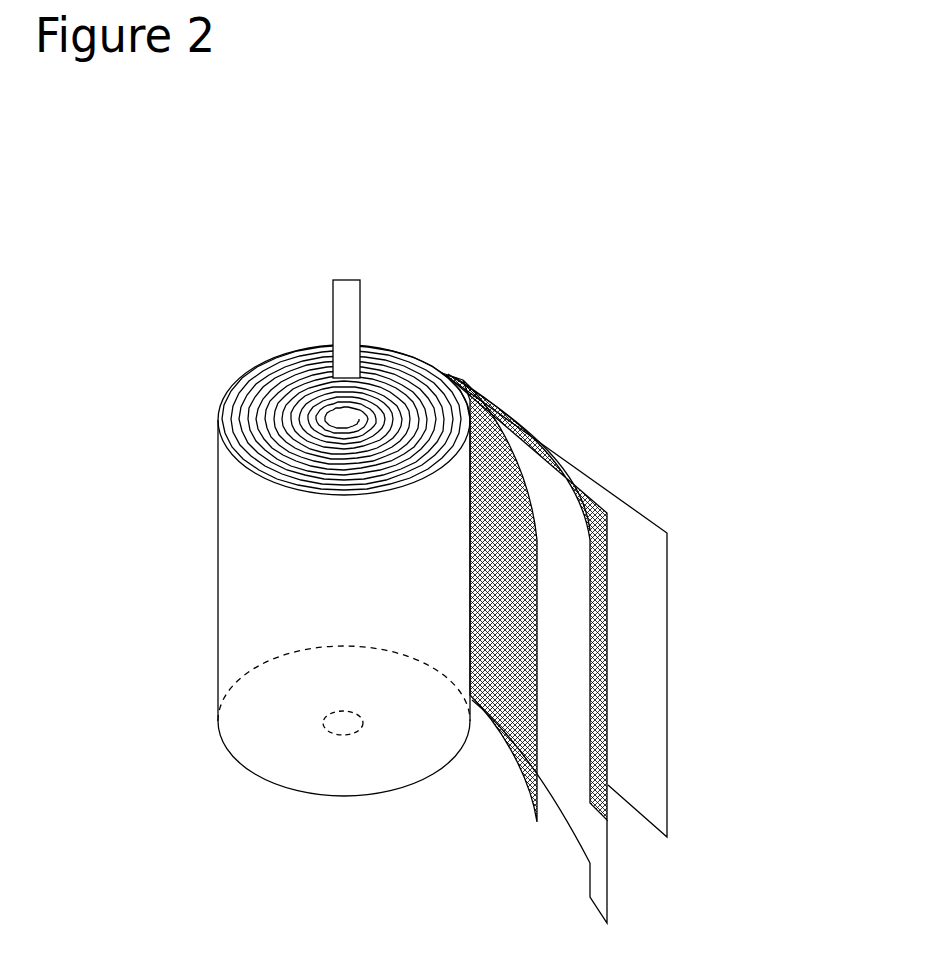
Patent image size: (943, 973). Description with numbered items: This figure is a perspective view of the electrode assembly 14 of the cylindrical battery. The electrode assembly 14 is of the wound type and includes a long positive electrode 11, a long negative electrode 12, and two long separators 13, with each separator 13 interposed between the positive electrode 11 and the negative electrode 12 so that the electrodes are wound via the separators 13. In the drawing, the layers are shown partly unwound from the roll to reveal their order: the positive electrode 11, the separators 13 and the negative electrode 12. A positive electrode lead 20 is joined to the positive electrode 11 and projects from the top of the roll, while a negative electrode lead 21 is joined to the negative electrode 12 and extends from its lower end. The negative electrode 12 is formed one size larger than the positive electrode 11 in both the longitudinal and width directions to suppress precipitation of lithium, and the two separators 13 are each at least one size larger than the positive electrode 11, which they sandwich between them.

The electrode assembly 14 is at (673, 260).
The positive electrode lead 20 is at (333, 292).
The positive electrode 11 is at (500, 453).
The negative electrode 12 is at (583, 510).
The separator 13 is at (563, 672).
The negative electrode lead 21 is at (598, 885).